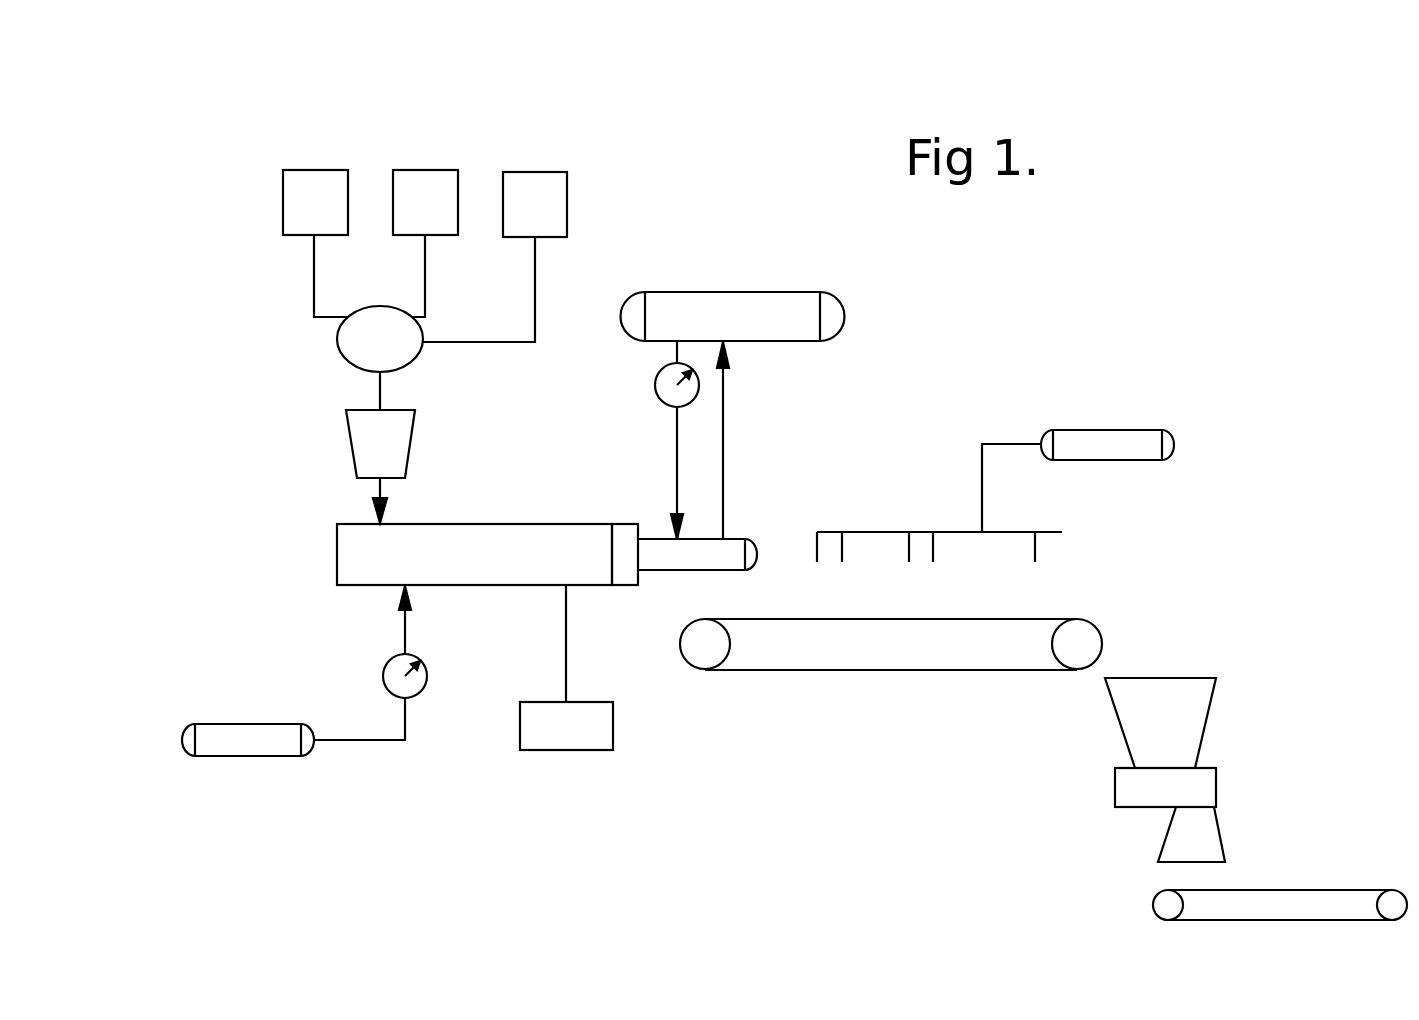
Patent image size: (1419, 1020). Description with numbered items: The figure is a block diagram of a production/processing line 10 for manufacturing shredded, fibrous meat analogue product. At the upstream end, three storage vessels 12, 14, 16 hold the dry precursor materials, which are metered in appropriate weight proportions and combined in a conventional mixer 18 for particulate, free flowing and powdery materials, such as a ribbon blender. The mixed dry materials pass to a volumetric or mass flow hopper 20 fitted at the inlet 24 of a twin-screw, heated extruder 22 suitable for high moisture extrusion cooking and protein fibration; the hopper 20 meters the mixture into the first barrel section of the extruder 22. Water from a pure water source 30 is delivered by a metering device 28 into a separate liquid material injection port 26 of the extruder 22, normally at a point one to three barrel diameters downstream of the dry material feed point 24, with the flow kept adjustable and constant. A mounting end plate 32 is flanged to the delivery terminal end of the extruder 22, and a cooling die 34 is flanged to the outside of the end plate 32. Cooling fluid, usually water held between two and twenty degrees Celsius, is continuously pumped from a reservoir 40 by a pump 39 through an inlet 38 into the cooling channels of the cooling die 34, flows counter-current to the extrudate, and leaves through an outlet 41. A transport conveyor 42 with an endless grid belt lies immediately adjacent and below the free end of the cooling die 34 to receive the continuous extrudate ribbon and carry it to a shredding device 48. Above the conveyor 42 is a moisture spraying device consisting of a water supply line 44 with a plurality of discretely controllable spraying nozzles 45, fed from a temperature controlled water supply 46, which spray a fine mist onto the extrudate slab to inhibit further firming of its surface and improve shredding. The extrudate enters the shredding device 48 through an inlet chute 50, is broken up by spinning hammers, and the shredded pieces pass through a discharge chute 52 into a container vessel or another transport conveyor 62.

The production/processing line 10 is at (790, 774).
The storage vessel 12 is at (305, 170).
The storage vessel 14 is at (422, 170).
The storage vessel 16 is at (535, 172).
The mixer 18 is at (360, 346).
The volumetric or mass flow hopper 20 is at (412, 446).
The twin-screw heated extruder 22 is at (492, 535).
The inlet 24 is at (373, 521).
The liquid material injection port 26 is at (400, 590).
The metering device 28 is at (418, 693).
The pure water source 30 is at (246, 757).
The mounting end plate 32 is at (623, 588).
The cooling die 34 is at (697, 570).
The inlet 38 is at (675, 538).
The pump 39 is at (657, 395).
The reservoir 40 is at (683, 313).
The outlet 41 is at (725, 537).
The transport conveyor 42 is at (888, 671).
The water supply line 44 is at (867, 532).
The spraying nozzles 45 is at (933, 547).
The temperature controlled water supply 46 is at (1133, 443).
The shredding device 48 is at (1217, 790).
The inlet chute 50 is at (1210, 708).
The discharge chute 52 is at (1223, 840).
The transport conveyor 62 is at (1313, 905).